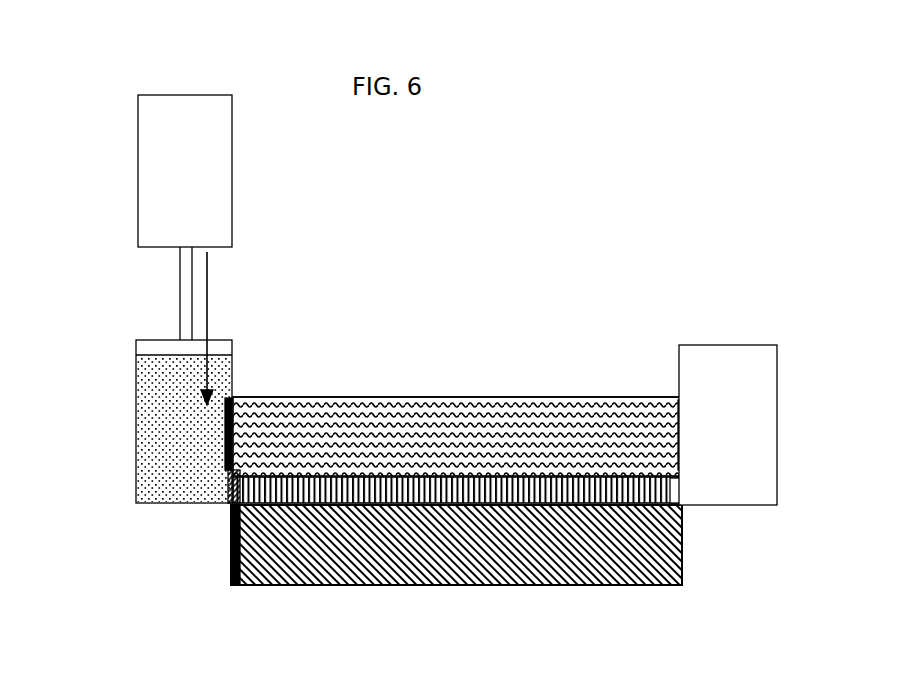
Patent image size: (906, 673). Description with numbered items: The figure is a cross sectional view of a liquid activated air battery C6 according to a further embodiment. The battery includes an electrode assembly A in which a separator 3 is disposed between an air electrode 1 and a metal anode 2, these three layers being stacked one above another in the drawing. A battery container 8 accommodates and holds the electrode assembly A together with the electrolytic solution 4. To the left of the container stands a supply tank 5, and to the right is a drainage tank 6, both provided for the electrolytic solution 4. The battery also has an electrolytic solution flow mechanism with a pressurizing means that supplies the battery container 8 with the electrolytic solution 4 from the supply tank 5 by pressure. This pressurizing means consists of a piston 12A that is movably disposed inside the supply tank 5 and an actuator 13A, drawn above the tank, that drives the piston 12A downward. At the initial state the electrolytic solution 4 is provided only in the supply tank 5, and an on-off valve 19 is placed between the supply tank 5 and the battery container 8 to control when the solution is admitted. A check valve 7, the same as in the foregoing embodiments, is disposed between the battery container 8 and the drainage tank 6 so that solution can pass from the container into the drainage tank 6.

The actuator 13A is at (158, 137).
The piston 12A is at (150, 344).
The electrolytic solution 4 is at (160, 448).
The supply tank 5 is at (233, 363).
The on-off valve 19 is at (223, 503).
The air electrode 1 is at (347, 420).
The electrode assembly A is at (407, 391).
The liquid activated air battery C6 is at (569, 374).
The separator 3 is at (522, 493).
The metal anode 2 is at (380, 573).
The check valve 7 is at (677, 487).
The battery container 8 is at (683, 417).
The drainage tank 6 is at (748, 367).